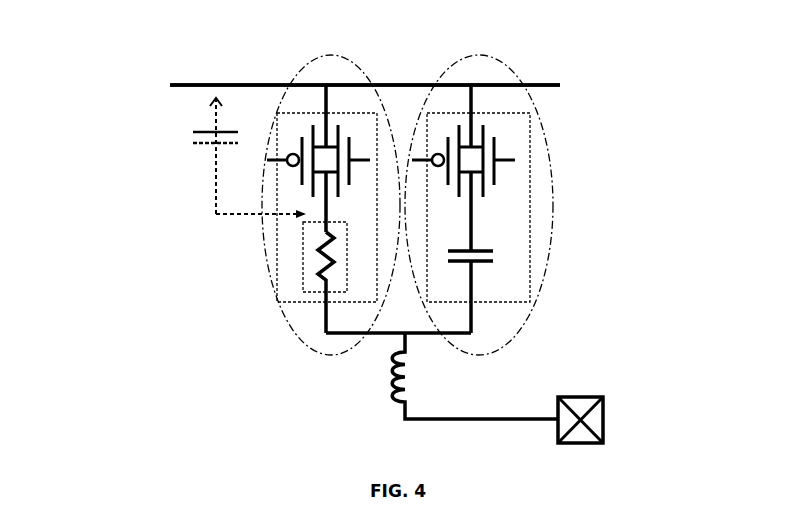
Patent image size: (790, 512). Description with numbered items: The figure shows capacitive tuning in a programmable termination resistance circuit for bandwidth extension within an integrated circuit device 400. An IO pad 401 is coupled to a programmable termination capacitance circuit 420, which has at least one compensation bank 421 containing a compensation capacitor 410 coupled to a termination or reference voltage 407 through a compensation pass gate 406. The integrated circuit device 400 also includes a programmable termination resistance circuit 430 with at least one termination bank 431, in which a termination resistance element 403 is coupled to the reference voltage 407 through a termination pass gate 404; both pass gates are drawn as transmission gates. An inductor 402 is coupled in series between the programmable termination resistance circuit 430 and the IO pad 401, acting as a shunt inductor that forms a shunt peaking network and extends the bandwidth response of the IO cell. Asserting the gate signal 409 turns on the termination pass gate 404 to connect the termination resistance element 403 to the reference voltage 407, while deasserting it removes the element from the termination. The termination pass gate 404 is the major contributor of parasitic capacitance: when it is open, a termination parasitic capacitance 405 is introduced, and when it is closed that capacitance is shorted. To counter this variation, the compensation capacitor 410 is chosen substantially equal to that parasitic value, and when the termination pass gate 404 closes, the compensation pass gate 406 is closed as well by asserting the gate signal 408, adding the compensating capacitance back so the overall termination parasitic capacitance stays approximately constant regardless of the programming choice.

The integrated circuit device 400 is at (128, 95).
The IO pad 401 is at (603, 427).
The inductor 402 is at (378, 388).
The termination resistance element 403 is at (312, 292).
The termination pass gate 404 is at (334, 158).
The termination parasitic capacitance 405 is at (200, 158).
The compensation pass gate 406 is at (498, 168).
The reference voltage 407 is at (235, 85).
The gate signal 408 is at (509, 164).
The gate signal 409 is at (363, 164).
The compensation capacitor 410 is at (493, 276).
The programmable termination capacitance circuit 420 is at (512, 62).
The compensation bank 421 is at (530, 285).
The programmable termination resistance circuit 430 is at (355, 61).
The termination bank 431 is at (290, 286).